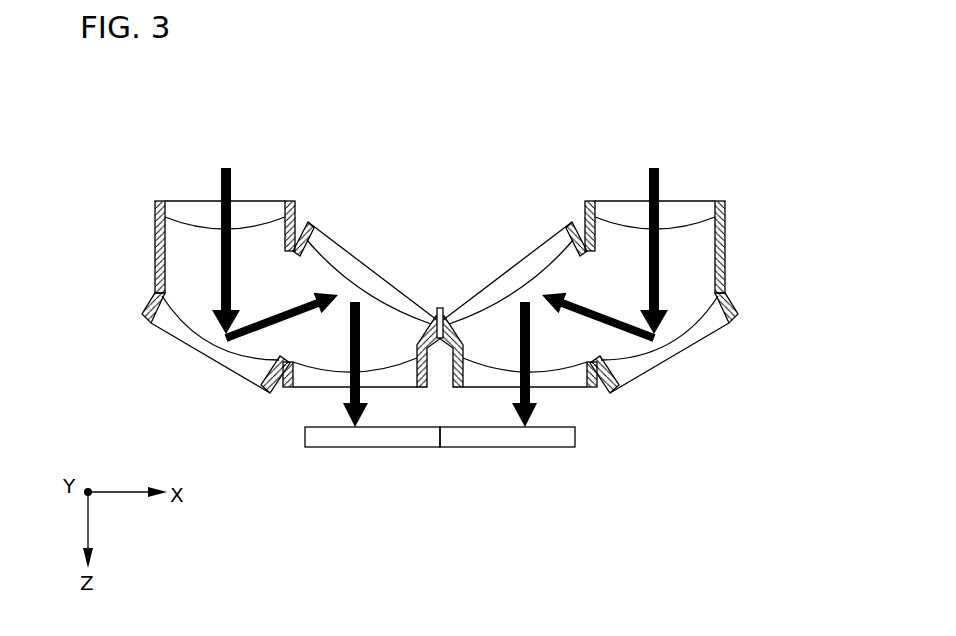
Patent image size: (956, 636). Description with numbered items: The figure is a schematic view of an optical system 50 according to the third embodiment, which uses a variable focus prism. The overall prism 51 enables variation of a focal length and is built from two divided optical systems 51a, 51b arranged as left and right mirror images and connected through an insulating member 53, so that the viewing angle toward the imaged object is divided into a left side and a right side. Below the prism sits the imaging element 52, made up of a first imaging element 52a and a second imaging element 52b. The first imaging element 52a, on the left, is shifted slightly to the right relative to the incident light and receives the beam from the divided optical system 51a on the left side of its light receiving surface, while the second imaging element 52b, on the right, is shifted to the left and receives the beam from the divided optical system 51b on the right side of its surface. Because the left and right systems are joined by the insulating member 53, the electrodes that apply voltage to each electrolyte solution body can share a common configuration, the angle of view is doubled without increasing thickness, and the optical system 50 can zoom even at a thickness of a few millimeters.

The optical system 50 is at (505, 89).
The overall prism 51 is at (734, 177).
The divided optical system 51a is at (225, 146).
The divided optical system 51b is at (654, 146).
The imaging element 52 is at (503, 508).
The first imaging element 52a is at (407, 448).
The second imaging element 52b is at (468, 448).
The insulating member 53 is at (438, 306).